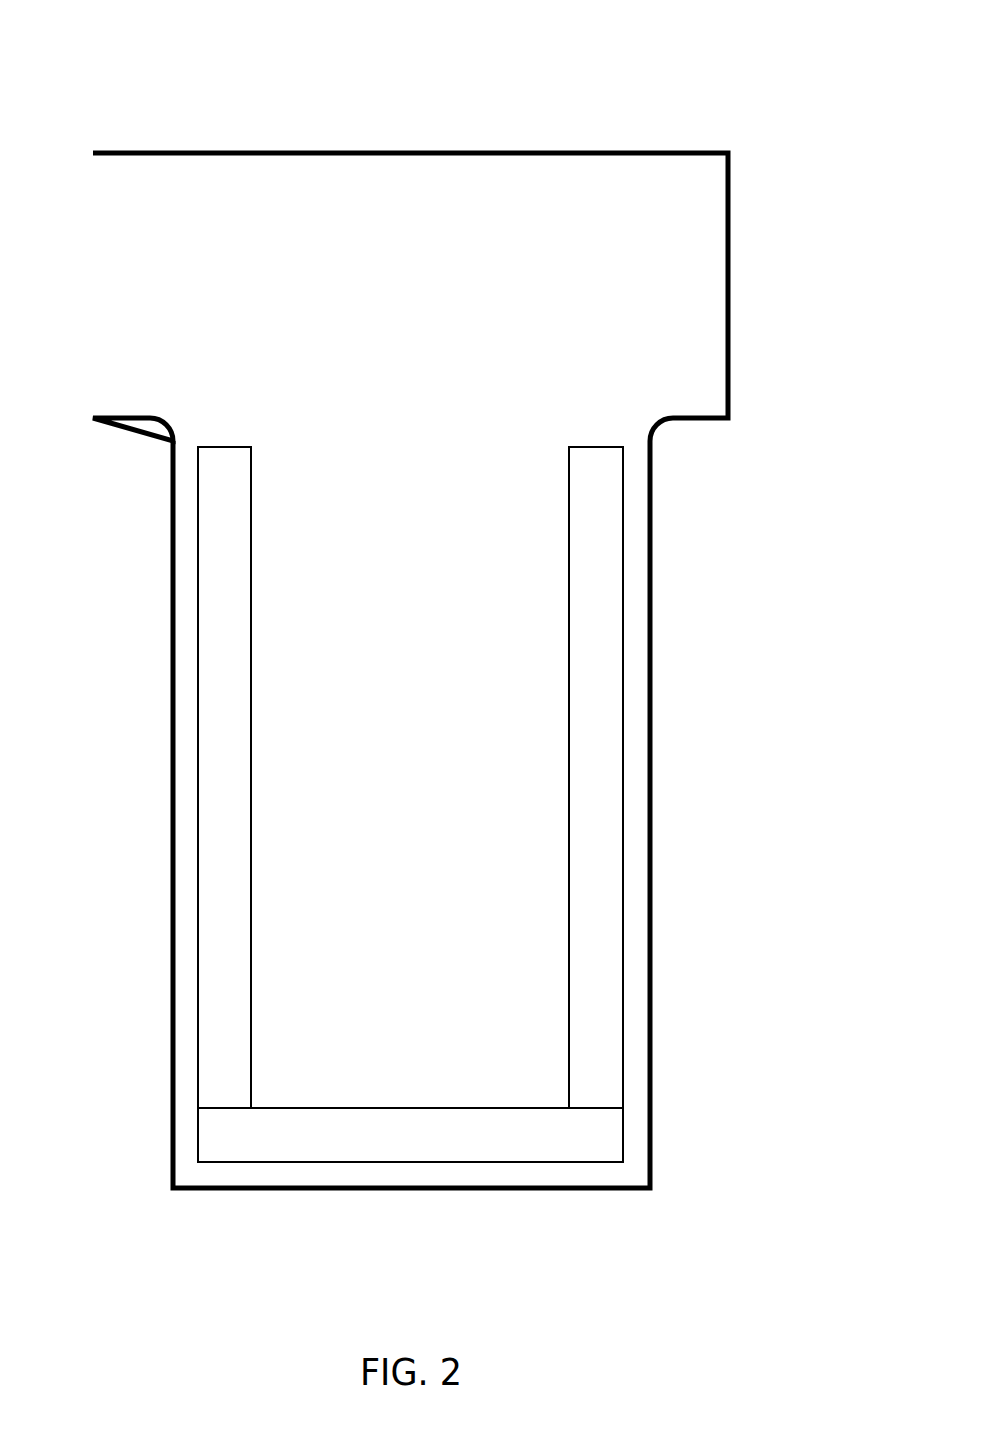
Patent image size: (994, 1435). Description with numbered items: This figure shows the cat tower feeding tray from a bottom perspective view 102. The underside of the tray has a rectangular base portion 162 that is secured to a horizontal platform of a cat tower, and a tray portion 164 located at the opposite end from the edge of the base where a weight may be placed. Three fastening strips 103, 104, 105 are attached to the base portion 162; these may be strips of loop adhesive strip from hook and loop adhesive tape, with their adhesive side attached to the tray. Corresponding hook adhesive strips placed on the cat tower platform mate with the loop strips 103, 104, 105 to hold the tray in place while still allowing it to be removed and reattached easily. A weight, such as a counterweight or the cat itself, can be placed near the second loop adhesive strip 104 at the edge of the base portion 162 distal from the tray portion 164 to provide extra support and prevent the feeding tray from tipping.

The bottom perspective view 102 is at (439, 656).
The tray portion 164 is at (623, 175).
The base portion 162 is at (653, 860).
The fastening strip 103 is at (197, 630).
The fastening strip 105 is at (623, 660).
The second loop adhesive strip 104 is at (342, 1158).